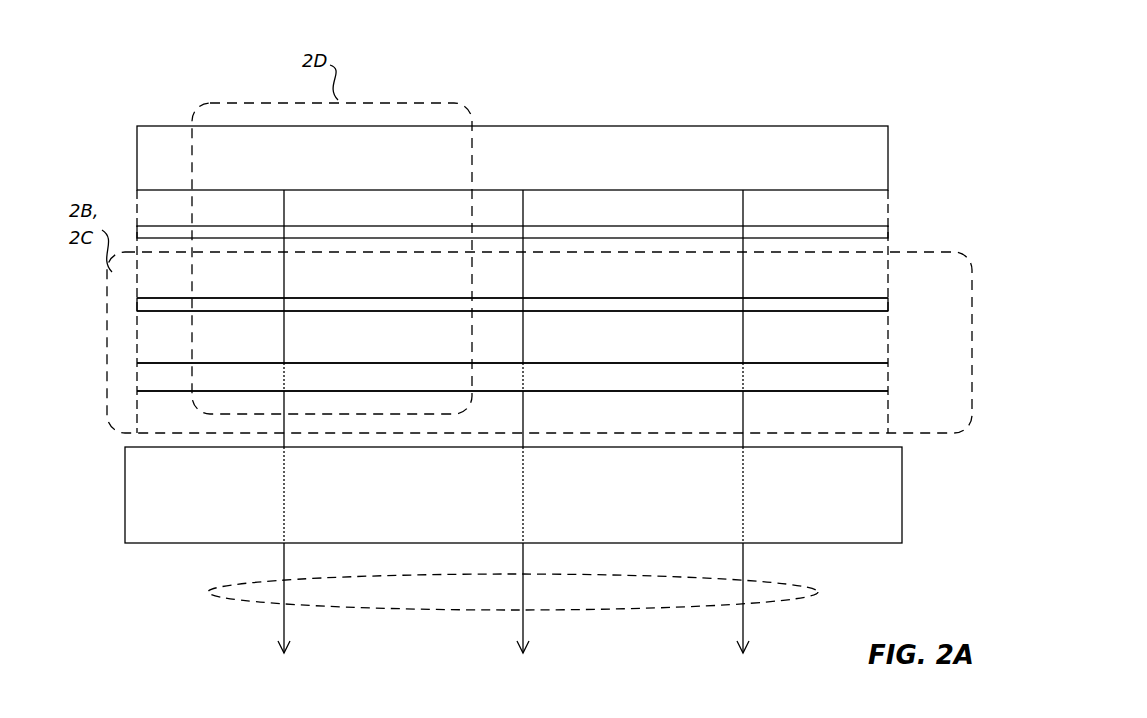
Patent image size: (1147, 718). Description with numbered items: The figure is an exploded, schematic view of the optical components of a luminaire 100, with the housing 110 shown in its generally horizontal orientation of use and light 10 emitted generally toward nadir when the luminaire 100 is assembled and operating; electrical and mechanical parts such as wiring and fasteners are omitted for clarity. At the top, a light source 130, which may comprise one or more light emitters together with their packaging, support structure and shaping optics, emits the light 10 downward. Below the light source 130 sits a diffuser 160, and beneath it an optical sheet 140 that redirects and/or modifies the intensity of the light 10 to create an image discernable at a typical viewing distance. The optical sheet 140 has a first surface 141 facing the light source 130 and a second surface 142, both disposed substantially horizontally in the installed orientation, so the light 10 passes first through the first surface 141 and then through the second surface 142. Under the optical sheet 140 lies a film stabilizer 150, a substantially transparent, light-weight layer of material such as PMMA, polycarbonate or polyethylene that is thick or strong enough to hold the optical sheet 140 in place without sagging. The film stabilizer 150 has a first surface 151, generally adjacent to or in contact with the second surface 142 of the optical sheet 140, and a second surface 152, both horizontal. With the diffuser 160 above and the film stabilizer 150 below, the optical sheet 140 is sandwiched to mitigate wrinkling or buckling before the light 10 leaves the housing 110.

The luminaire 100 is at (860, 88).
The light source 130 is at (565, 158).
The diffuser 160 is at (862, 232).
The optical sheet 140 is at (870, 305).
The first surface 141 is at (830, 293).
The second surface 142 is at (830, 319).
The film stabilizer 150 is at (860, 375).
The first surface 151 is at (580, 357).
The second surface 152 is at (580, 395).
The housing 110 is at (170, 520).
The light 10 is at (237, 598).